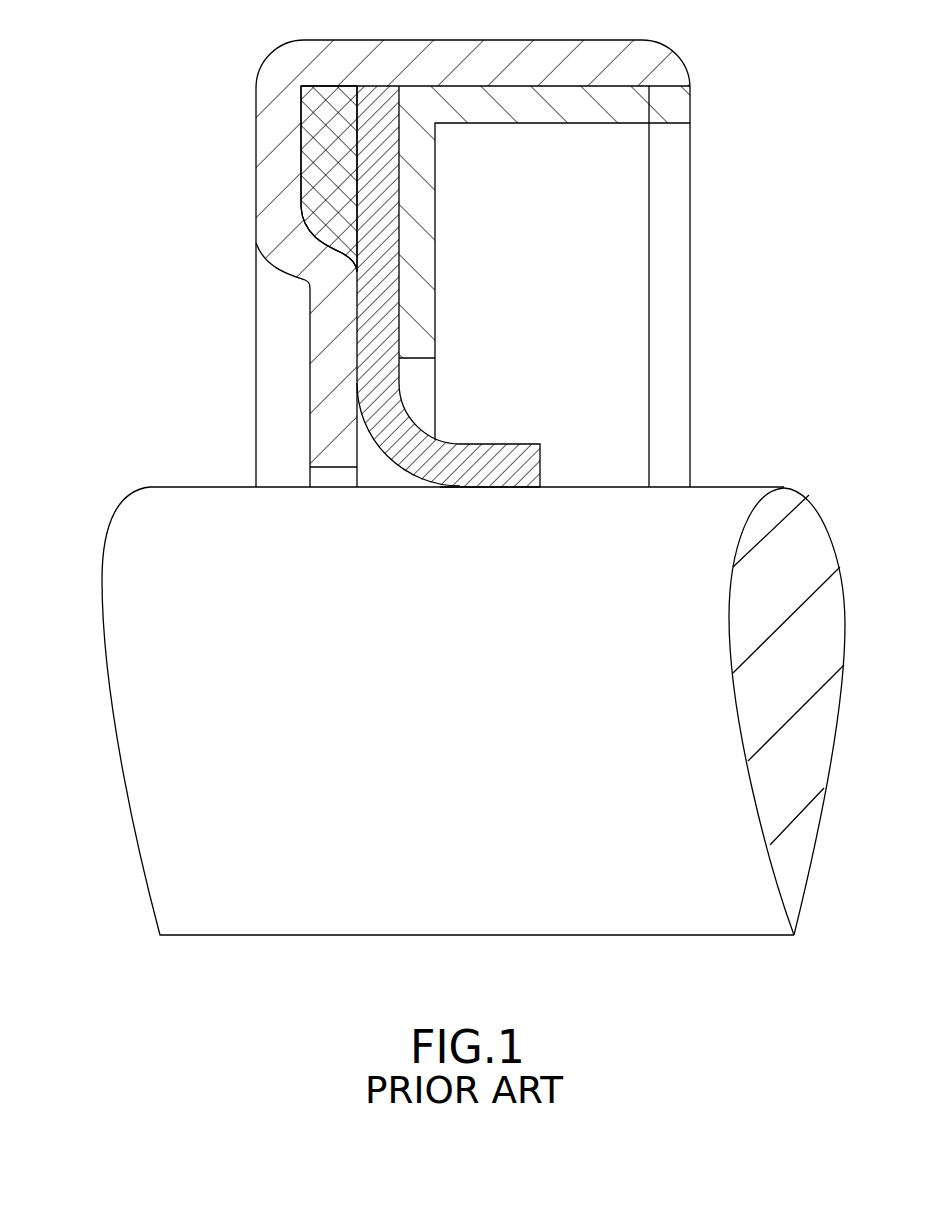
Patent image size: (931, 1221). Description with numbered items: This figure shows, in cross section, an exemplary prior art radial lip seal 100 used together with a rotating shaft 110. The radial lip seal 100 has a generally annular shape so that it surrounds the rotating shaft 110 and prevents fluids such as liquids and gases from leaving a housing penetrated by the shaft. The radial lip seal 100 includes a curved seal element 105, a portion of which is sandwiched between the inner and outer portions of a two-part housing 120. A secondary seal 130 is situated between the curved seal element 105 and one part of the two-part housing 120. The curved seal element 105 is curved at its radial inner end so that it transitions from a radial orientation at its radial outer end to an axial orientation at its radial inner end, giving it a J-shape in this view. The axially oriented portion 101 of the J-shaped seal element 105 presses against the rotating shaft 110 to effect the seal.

The radial lip seal 100 is at (222, 88).
The axially oriented portion 101 is at (458, 483).
The curved seal element 105 is at (400, 238).
The rotating shaft 110 is at (200, 595).
The two-part housing 120 is at (613, 100).
The secondary seal 130 is at (328, 150).